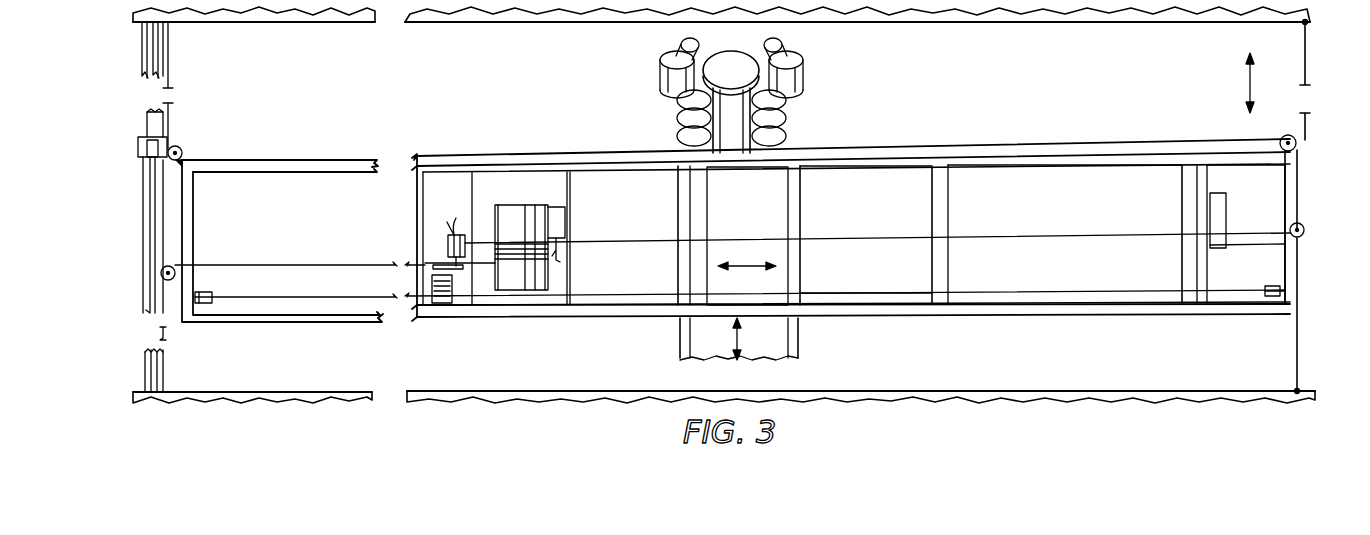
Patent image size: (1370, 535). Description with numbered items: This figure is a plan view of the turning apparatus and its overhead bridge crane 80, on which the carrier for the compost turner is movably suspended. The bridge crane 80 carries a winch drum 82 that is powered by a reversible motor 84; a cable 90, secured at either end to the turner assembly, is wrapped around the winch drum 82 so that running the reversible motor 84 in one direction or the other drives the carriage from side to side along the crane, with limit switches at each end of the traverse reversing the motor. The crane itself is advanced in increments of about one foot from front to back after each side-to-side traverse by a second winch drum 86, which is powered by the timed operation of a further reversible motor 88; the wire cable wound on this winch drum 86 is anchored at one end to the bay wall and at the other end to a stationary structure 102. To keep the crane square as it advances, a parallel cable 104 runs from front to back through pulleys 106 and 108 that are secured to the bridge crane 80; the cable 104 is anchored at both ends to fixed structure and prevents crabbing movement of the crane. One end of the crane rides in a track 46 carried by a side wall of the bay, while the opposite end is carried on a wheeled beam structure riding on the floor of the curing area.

The track 46 is at (160, 238).
The bridge crane 80 is at (1013, 126).
The winch drum 82 is at (432, 281).
The reversible motor 84 is at (448, 244).
The winch drum 86 is at (537, 278).
The reversible motor 88 is at (565, 222).
The cable 90 is at (392, 298).
The stationary structure 102 is at (1166, 22).
The parallel cable 104 is at (380, 155).
The pulley 106 is at (1295, 140).
The pulley 108 is at (181, 149).